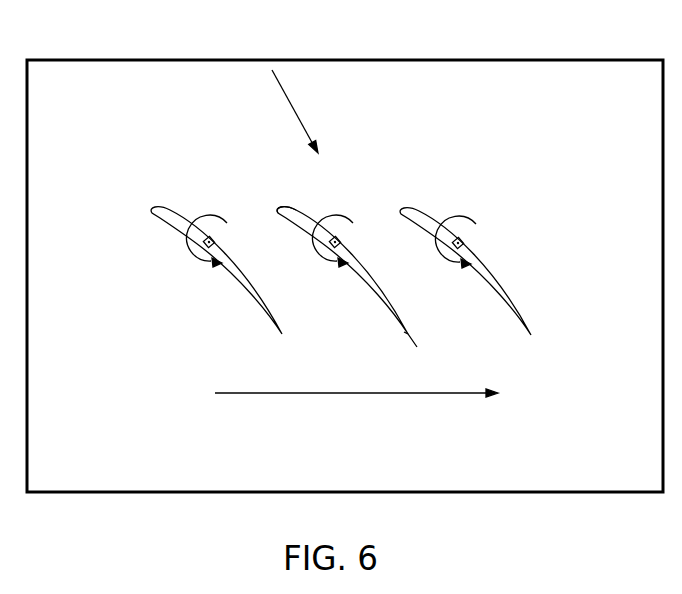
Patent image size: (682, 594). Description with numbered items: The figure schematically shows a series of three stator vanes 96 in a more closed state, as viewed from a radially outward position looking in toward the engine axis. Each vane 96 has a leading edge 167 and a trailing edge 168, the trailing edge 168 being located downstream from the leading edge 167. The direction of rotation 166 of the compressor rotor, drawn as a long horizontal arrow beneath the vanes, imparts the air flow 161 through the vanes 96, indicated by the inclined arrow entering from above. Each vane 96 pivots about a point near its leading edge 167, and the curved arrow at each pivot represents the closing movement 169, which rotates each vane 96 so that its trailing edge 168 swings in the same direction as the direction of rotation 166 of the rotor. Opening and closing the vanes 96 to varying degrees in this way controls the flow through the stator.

The vane 96 is at (257, 297).
The air flow 161 is at (303, 127).
The direction of rotation 166 is at (330, 393).
The leading edge 167 is at (280, 214).
The trailing edge 168 is at (417, 347).
The closing movement 169 is at (190, 255).